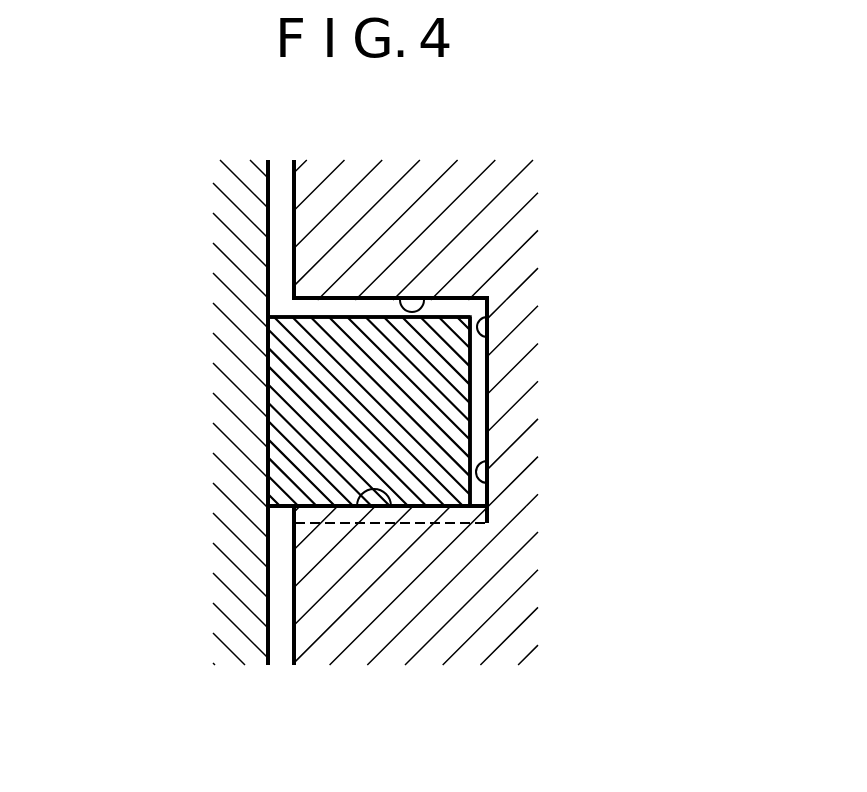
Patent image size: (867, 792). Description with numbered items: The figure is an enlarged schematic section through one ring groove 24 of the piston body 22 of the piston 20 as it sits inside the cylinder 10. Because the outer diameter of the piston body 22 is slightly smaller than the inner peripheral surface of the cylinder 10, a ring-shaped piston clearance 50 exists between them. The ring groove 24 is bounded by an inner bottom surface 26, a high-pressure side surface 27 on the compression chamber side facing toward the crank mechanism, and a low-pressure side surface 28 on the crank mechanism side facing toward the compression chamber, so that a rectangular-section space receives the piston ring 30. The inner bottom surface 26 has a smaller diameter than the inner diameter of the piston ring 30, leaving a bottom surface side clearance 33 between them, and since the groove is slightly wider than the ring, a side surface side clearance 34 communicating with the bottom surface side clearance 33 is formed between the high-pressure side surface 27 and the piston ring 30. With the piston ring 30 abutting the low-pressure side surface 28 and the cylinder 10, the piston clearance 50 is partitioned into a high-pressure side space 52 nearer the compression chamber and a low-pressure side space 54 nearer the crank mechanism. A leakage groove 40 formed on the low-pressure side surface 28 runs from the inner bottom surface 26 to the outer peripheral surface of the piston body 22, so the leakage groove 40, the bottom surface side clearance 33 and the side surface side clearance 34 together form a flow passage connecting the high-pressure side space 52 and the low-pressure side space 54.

The cylinder 10 is at (237, 222).
The piston 20 is at (375, 412).
The piston body 22 is at (332, 608).
The ring groove 24 is at (488, 317).
The inner bottom surface 26 is at (485, 482).
The high-pressure side surface 27 is at (424, 300).
The low-pressure side surface 28 is at (390, 507).
The piston ring 30 is at (442, 423).
The bottom surface side clearance 33 is at (477, 378).
The side surface side clearance 34 is at (338, 307).
The leakage groove 40 is at (428, 513).
The piston clearance 50 is at (180, 412).
The high-pressure side space 52 is at (282, 290).
The low-pressure side space 54 is at (282, 533).